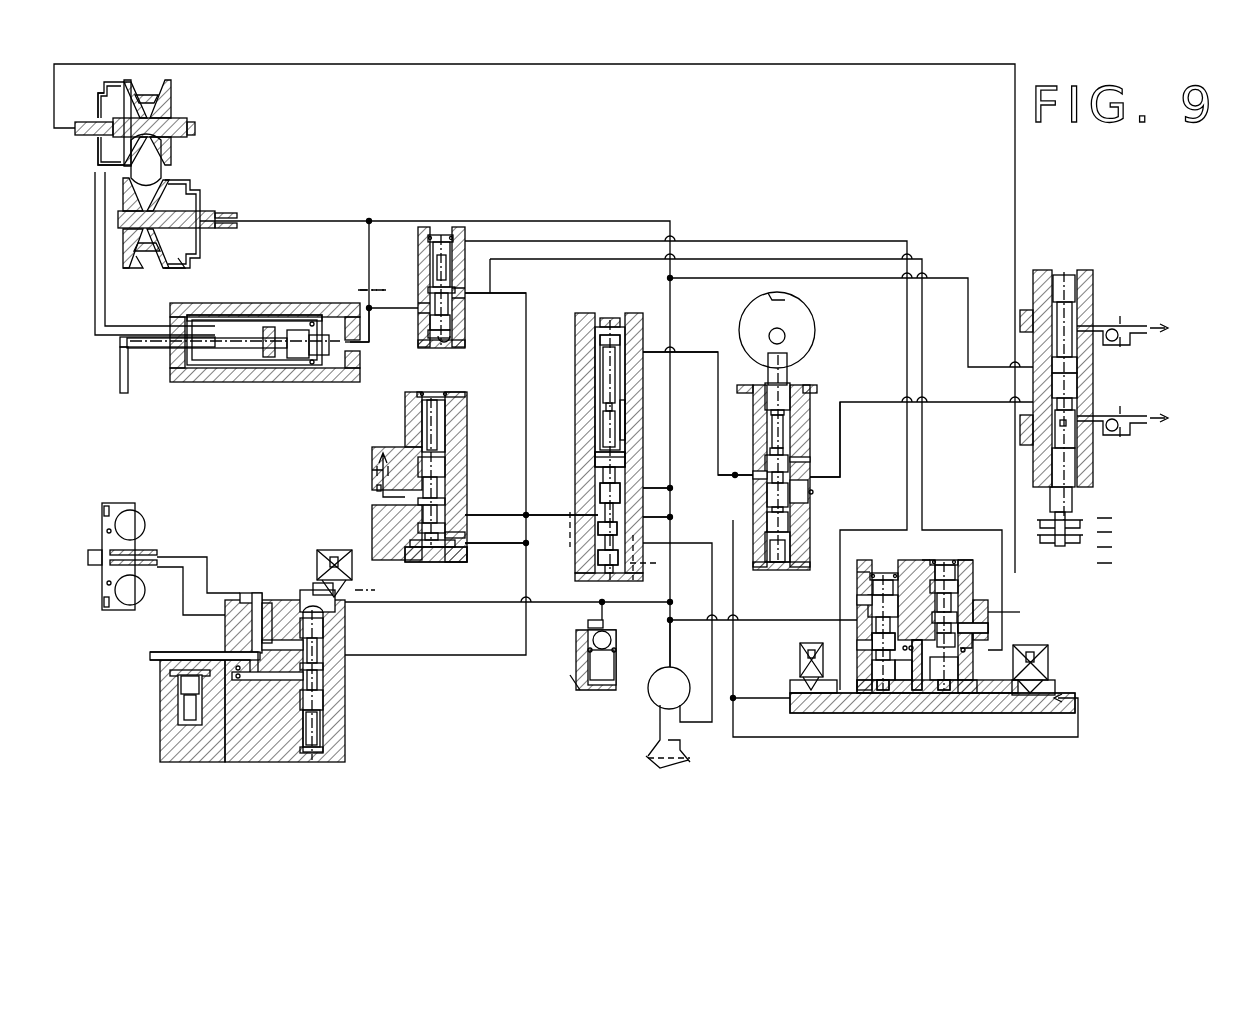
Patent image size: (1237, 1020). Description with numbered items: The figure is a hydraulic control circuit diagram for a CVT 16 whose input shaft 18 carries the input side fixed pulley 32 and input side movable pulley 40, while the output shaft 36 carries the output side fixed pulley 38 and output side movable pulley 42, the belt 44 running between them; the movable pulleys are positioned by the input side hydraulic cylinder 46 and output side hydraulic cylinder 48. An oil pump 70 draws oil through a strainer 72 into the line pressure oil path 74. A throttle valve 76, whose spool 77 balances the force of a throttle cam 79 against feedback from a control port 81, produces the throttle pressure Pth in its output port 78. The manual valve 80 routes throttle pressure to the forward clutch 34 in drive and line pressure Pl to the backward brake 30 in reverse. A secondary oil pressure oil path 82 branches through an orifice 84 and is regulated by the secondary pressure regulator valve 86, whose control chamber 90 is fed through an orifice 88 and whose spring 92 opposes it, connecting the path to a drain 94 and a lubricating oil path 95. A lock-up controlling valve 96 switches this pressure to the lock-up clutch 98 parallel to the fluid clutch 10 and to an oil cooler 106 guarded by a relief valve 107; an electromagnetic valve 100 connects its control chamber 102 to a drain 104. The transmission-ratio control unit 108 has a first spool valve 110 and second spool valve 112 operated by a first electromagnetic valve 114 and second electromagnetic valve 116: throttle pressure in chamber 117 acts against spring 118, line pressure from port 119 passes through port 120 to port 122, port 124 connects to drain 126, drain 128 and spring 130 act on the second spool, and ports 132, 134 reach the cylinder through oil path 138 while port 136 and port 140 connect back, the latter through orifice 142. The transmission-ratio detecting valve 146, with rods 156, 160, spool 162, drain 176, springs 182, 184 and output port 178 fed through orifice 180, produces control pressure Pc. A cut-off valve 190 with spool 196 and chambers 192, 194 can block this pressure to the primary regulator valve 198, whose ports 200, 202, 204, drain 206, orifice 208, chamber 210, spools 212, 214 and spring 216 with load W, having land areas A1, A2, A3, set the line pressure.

The fluid clutch 10 is at (142, 512).
The CVT 16 is at (156, 82).
The input shaft 18 is at (190, 128).
The backward brake 30 is at (1141, 331).
The input side fixed pulley 32 is at (172, 100).
The forward clutch 34 is at (1141, 421).
The output shaft 36 is at (118, 214).
The output side fixed pulley 38 is at (123, 244).
The input side movable pulley 40 is at (126, 80).
The output side movable pulley 42 is at (170, 262).
The belt 44 is at (142, 262).
The input side hydraulic cylinder 46 is at (100, 148).
The output side hydraulic cylinder 48 is at (180, 196).
The oil pump 70 is at (653, 706).
The strainer 72 is at (688, 757).
The line pressure oil path 74 is at (671, 636).
The throttle valve 76 is at (814, 404).
The spool 77 is at (805, 470).
The output port 78 is at (753, 470).
The throttle cam 79 is at (808, 334).
The manual valve 80 is at (1063, 258).
The control port 81 is at (606, 700).
The secondary oil pressure oil path 82 is at (575, 555).
The orifice 84 is at (596, 545).
The secondary pressure regulator valve 86 is at (436, 568).
The orifice 88 is at (462, 545).
The control chamber 90 is at (422, 552).
The spring 92 is at (417, 393).
The drain 94 is at (452, 462).
The lubricating oil path 95 is at (388, 456).
The lock-up controlling valve 96 is at (314, 772).
The lock-up clutch 98 is at (104, 506).
The electromagnetic valve 100 is at (338, 546).
The control chamber 102 is at (300, 600).
The drain 104 is at (318, 584).
The oil cooler 106 is at (126, 656).
The relief valve 107 is at (189, 740).
The transmission-ratio control unit 108 is at (909, 702).
The first spool valve 110 is at (886, 560).
The second spool valve 112 is at (950, 548).
The first electromagnetic valve 114 is at (800, 665).
The second electromagnetic valve 116 is at (1050, 670).
The chamber 117 is at (878, 695).
The spring 118 is at (868, 572).
The port 119 is at (862, 600).
The port 120 is at (882, 696).
The port 122 is at (898, 589).
The port 124 is at (915, 690).
The drain 126 is at (862, 645).
The drain / chamber 128 is at (802, 700).
The spring 130 is at (958, 562).
The port 132 is at (1023, 616).
The port 134 is at (990, 693).
The port 136 is at (944, 692).
The oil path 138 is at (1015, 560).
The port 140 is at (990, 632).
The orifice 142 is at (902, 690).
The transmission-ratio detecting valve 146 is at (244, 396).
The rod 156 is at (147, 350).
The rod 160 is at (95, 326).
The spool 162 is at (245, 365).
The drain 176 is at (266, 360).
The output port 178 is at (355, 352).
The orifice 180 is at (366, 290).
The spring 182 is at (222, 314).
The spring 184 is at (262, 314).
The cut-off valve 190 is at (452, 352).
The chamber 192 is at (441, 234).
The chamber 194 is at (458, 338).
The spool 196 is at (470, 300).
The primary regulator valve 198 is at (614, 308).
The port 200 is at (648, 352).
The port 202 is at (598, 460).
The port 204 is at (660, 517).
The drain 206 is at (650, 546).
The orifice 208 is at (648, 566).
The chamber 210 is at (633, 614).
The spool 212 is at (630, 490).
The spool 214 is at (604, 372).
The spring 216 is at (604, 430).
The control pressure Pc is at (372, 320).
The line pressure Pl is at (672, 494).
The throttle pressure Pth is at (841, 458).
The land cross sectional area A1 is at (588, 500).
The land cross sectional area A2 is at (625, 478).
The land cross sectional area A3 is at (622, 370).
The spring load W is at (630, 408).